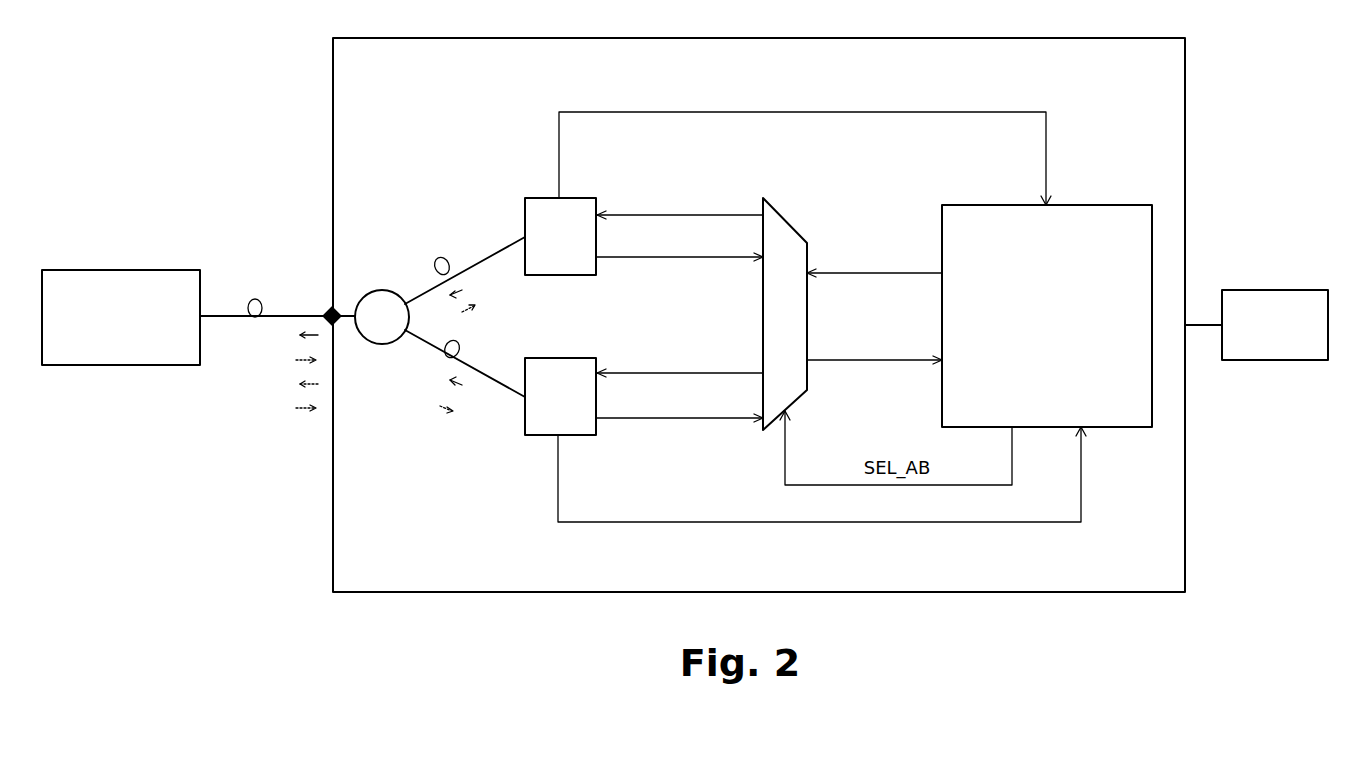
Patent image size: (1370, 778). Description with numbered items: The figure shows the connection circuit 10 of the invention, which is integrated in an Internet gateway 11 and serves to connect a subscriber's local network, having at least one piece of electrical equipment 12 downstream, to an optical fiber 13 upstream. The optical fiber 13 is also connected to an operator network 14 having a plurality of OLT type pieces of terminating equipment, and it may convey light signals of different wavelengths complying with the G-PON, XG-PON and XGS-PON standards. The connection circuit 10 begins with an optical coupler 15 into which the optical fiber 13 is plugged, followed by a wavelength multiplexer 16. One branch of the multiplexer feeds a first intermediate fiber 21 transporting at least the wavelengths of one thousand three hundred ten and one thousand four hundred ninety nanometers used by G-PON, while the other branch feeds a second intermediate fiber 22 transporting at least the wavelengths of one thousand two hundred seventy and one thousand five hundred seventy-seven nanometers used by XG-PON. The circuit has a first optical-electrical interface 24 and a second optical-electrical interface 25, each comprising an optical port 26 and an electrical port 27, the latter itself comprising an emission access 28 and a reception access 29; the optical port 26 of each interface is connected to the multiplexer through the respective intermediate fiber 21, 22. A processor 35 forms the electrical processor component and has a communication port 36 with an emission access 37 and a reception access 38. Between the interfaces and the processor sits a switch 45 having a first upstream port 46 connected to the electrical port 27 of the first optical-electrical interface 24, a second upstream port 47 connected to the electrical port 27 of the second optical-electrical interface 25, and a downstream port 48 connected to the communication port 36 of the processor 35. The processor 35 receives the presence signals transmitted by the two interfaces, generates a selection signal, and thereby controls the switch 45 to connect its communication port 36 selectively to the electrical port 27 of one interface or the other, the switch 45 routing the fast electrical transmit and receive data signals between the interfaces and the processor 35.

The connection circuit 10 is at (794, 315).
The Internet gateway 11 is at (1186, 410).
The electrical equipment 12 is at (1278, 290).
The optical fiber 13 is at (290, 316).
The operator network 14 is at (128, 270).
The optical coupler 15 is at (330, 311).
The wavelength multiplexer 16 is at (384, 297).
The first intermediate fiber 21 is at (477, 258).
The second intermediate fiber 22 is at (478, 378).
The first optical-electrical interface 24 is at (543, 197).
The second optical-electrical interface 25 is at (540, 358).
The optical port 26 is at (523, 233).
The electrical port 27 is at (612, 265).
The emission access 28 is at (596, 276).
The reception access 29 is at (603, 212).
The processor 35 is at (1108, 205).
The communication port 36 is at (921, 246).
The emission access 37 is at (944, 273).
The reception access 38 is at (944, 360).
The switch 45 is at (790, 230).
The first upstream port 46 is at (748, 196).
The second upstream port 47 is at (737, 436).
The downstream port 48 is at (812, 370).